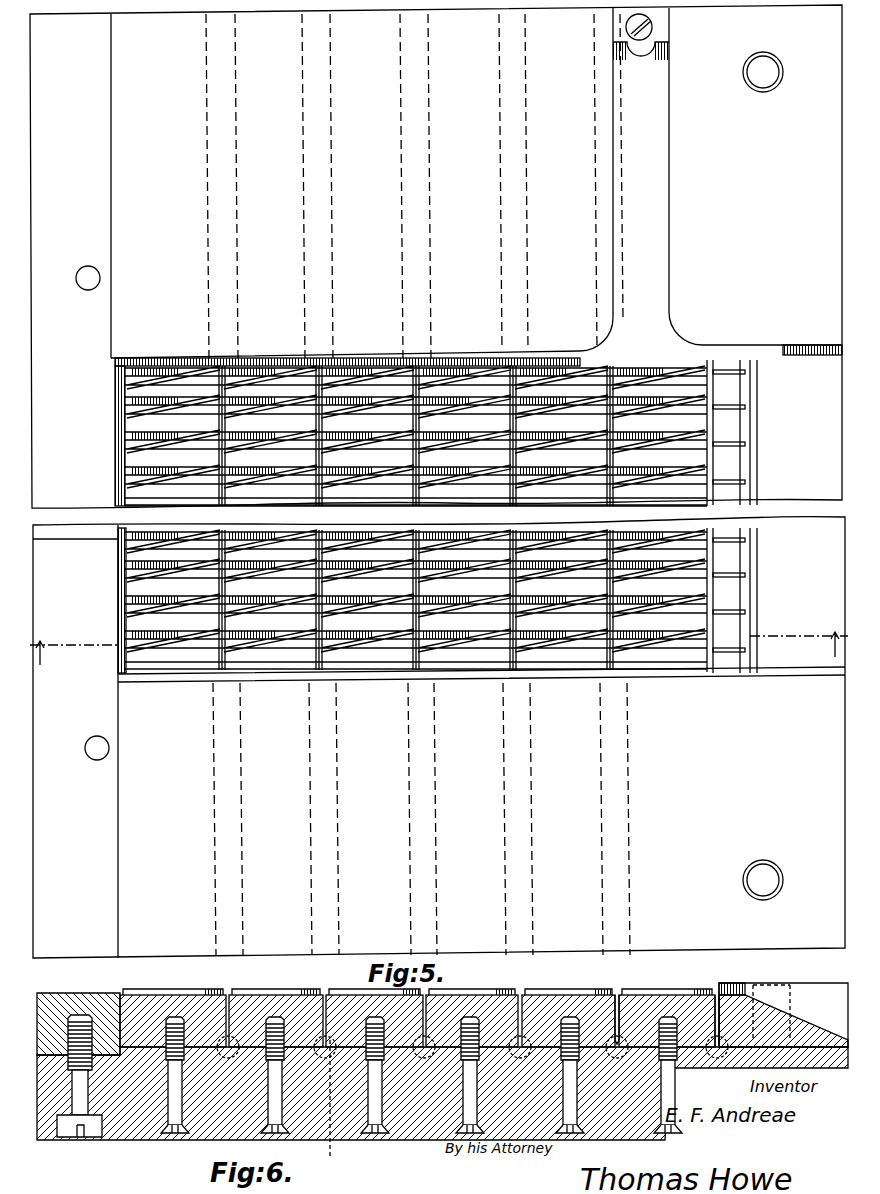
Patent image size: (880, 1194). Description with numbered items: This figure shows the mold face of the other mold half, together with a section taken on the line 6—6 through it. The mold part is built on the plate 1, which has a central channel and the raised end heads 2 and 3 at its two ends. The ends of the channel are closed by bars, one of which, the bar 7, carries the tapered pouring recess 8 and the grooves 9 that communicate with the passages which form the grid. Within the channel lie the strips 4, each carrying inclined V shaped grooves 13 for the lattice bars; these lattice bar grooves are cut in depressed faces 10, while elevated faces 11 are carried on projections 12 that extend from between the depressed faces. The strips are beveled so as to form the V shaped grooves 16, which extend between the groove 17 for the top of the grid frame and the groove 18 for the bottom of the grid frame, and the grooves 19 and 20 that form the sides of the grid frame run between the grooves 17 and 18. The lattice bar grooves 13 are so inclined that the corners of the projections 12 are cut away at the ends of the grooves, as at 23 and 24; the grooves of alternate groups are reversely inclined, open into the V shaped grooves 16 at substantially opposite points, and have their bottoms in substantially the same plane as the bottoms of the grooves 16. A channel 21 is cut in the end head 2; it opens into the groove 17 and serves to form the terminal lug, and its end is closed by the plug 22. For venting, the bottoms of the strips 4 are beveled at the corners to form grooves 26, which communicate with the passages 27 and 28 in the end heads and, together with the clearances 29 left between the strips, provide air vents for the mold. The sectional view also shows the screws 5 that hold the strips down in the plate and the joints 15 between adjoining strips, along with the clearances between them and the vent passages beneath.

In FIG. 5, the raised end head 2 is at (436, 256).
In FIG. 5, the raised end head 3 is at (439, 737).
In FIG. 5, the strip 4 is at (263, 385).
In FIG. 6, the strip 4 is at (198, 995).
In FIG. 6, the plate 1 is at (145, 1130).
In FIG. 6, the screw 5' 5 is at (375, 1128).
In FIG. 5, the section line 6 is at (439, 654).
In FIG. 6, the section line 6 is at (78, 1125).
In FIG. 6, the bar 7 is at (775, 990).
In FIG. 5, the tapered pouring recess 8 is at (812, 408).
In FIG. 6, the tapered pouring recess 8 is at (791, 1012).
In FIG. 5, the groove 9 is at (745, 575).
In FIG. 6, the groove 9 is at (740, 985).
In FIG. 5, the depressed face 10 is at (140, 395).
In FIG. 6, the depressed face 10 is at (305, 995).
In FIG. 5, the elevated face 11 is at (140, 425).
In FIG. 6, the elevated face 11 is at (275, 995).
In FIG. 5, the projection 12 is at (140, 470).
In FIG. 6, the projection 12 is at (672, 995).
In FIG. 5, the lattice bar groove 13 is at (650, 392).
In FIG. 6, the joint 15' 15 is at (335, 995).
In FIG. 5, the V shaped groove 16 is at (430, 362).
In FIG. 6, the V shaped groove 16 is at (522, 995).
In FIG. 5, the groove for the top of the grid frame 17 is at (362, 360).
In FIG. 5, the groove for the bottom of the grid frame 18 is at (450, 680).
In FIG. 5, the groove for forming the side of the grid frame 19 is at (715, 665).
In FIG. 6, the groove for forming the side of the grid frame 19 is at (718, 990).
In FIG. 5, the groove for forming the side of the grid frame 20 is at (125, 685).
In FIG. 6, the groove for forming the side of the grid frame 20 is at (125, 993).
In FIG. 5, the channel 21 is at (476, 183).
In FIG. 5, the plug 22 is at (655, 30).
In FIG. 5, the cut-away corner 23 is at (700, 443).
In FIG. 5, the cut-away corner 24 is at (625, 465).
In FIG. 6, the groove 26 is at (420, 1060).
In FIG. 5, the passage 27 is at (400, 180).
In FIG. 6, the passage 27 is at (337, 1107).
In FIG. 5, the passage 28 is at (408, 762).
In FIG. 6, the clearance 29 is at (620, 995).